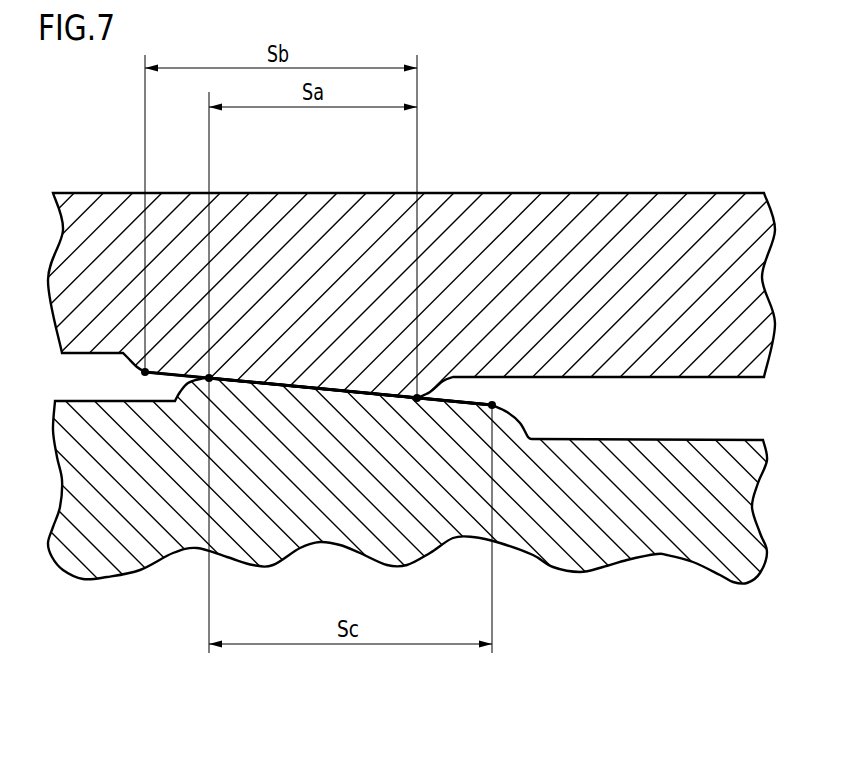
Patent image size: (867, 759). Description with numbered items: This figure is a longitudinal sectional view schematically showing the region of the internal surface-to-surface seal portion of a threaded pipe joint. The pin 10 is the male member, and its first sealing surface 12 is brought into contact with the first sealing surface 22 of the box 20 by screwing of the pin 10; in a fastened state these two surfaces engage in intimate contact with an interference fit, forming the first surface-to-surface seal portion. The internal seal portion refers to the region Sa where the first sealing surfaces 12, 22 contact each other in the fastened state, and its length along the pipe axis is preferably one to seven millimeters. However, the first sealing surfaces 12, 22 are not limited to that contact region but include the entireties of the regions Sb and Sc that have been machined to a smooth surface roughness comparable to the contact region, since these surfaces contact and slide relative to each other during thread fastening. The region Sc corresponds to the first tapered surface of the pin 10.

The pin 10 is at (132, 578).
The first sealing surface 12 is at (307, 390).
The box 20 is at (692, 180).
The first sealing surface 22 is at (323, 383).